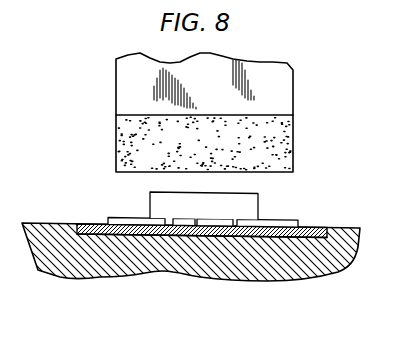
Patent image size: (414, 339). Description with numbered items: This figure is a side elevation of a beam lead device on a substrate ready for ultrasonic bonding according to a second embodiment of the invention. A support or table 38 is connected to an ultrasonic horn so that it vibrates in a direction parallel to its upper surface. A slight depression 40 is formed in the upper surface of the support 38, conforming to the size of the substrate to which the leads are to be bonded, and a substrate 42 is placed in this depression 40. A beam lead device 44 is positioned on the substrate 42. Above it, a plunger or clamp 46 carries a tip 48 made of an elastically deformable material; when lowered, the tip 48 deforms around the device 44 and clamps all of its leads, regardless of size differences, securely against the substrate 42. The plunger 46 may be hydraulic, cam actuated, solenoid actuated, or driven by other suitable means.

The support 38 is at (45, 222).
The depression 40 is at (162, 234).
The substrate 42 is at (317, 232).
The beam lead device 44 is at (247, 208).
The plunger 46 is at (282, 89).
The tip 48 is at (283, 137).